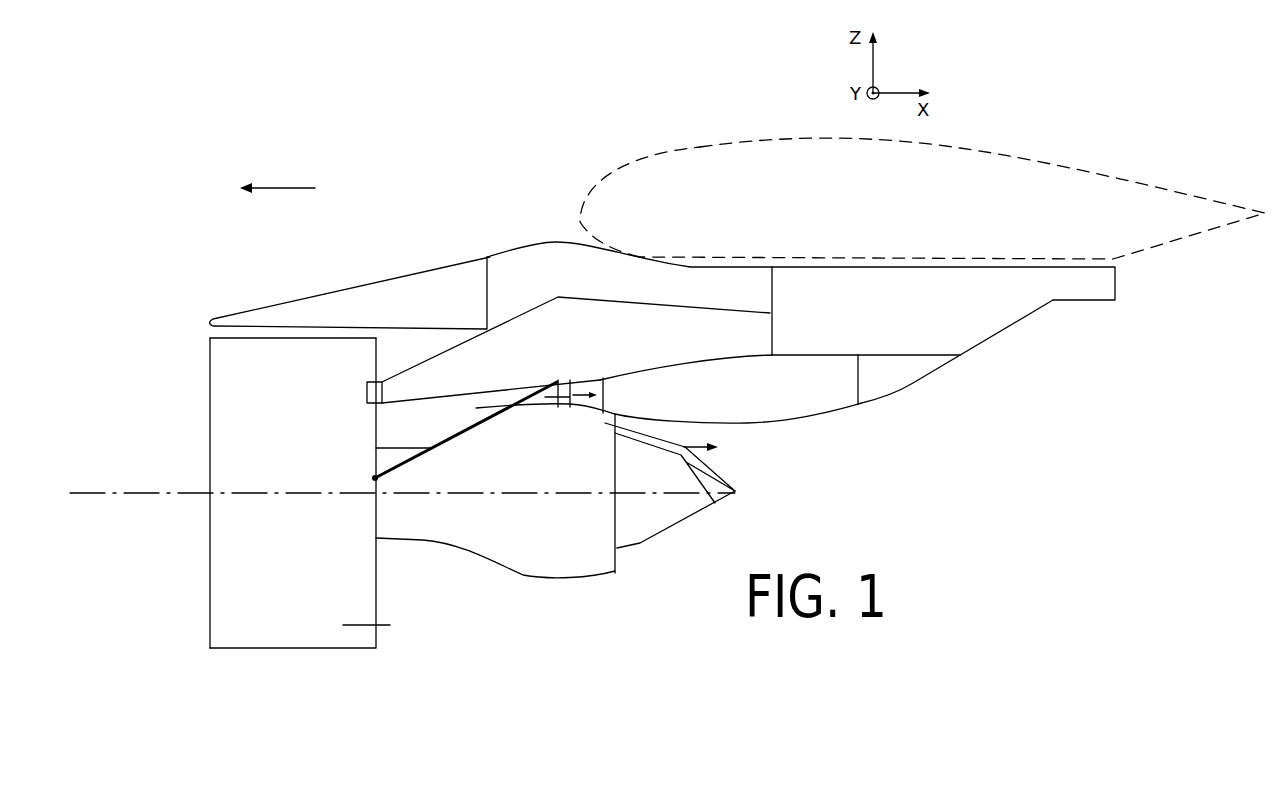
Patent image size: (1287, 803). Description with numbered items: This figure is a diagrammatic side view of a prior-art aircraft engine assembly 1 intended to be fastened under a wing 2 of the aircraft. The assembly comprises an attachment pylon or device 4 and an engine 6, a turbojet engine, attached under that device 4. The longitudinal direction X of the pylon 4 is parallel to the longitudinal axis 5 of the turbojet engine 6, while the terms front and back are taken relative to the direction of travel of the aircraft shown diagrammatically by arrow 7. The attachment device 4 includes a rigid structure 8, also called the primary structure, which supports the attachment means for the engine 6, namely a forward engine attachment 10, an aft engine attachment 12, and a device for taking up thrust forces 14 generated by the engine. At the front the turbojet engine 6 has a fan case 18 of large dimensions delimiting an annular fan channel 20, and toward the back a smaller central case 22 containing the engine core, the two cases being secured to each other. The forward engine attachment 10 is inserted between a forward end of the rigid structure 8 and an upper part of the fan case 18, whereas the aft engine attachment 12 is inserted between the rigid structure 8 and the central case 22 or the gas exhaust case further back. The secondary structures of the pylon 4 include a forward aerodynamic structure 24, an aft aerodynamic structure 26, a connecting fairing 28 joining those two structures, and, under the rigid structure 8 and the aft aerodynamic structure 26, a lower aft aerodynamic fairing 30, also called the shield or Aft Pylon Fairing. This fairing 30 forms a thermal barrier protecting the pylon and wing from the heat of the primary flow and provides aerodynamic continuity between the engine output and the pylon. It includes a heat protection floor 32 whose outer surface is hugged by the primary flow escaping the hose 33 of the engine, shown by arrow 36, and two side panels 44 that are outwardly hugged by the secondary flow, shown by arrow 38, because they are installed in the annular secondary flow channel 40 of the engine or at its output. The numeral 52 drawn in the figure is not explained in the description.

The engine assembly 1 is at (139, 413).
The wing 2 is at (1044, 165).
The attachment pylon 4 is at (575, 183).
The longitudinal axis 5 is at (78, 493).
The engine 6 is at (280, 668).
The arrow 7 is at (281, 188).
The rigid structure 8 is at (690, 317).
The forward engine attachment 10 is at (355, 393).
The aft engine attachment 12 is at (588, 383).
The device for taking up thrust forces 14 is at (430, 449).
The fan case 18 is at (223, 378).
The annular fan channel 20 is at (390, 625).
The central case 22 is at (413, 542).
The forward aerodynamic structure 24 is at (390, 279).
The aft aerodynamic structure 26 is at (857, 280).
The connecting fairing 28 is at (622, 262).
The lower aft aerodynamic fairing 30 is at (851, 417).
The heat protection floor 32 is at (745, 425).
The hose 33 is at (617, 522).
The arrow 36 is at (713, 503).
The arrow 38 is at (494, 403).
The annular secondary flow channel 40 is at (432, 428).
The side panels 44 is at (845, 343).
The aft fairing 52 is at (904, 392).